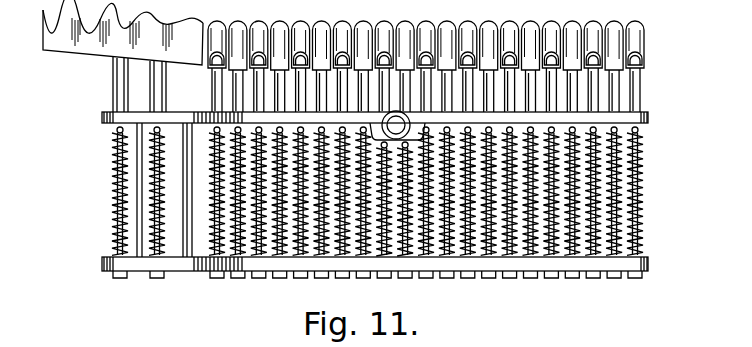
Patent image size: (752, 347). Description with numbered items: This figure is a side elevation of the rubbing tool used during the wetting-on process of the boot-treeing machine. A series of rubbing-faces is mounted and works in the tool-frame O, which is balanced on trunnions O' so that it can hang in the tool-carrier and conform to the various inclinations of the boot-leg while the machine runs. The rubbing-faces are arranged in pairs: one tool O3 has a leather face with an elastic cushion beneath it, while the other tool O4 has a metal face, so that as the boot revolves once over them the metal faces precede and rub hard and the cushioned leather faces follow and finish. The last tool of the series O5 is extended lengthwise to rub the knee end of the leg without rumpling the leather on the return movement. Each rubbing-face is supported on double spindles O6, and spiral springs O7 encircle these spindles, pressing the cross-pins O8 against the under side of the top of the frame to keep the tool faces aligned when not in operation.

The tool-frame O is at (387, 167).
The leather-faced rubbing-tool O3 is at (223, 23).
The metal-faced rubbing-tool O4 is at (243, 24).
The knee-end rubbing-tool O5 is at (78, 52).
The double spindles O6 is at (642, 200).
The spiral springs O7 is at (642, 227).
The cross-pins O8 is at (639, 131).
The trunnions O' is at (401, 122).